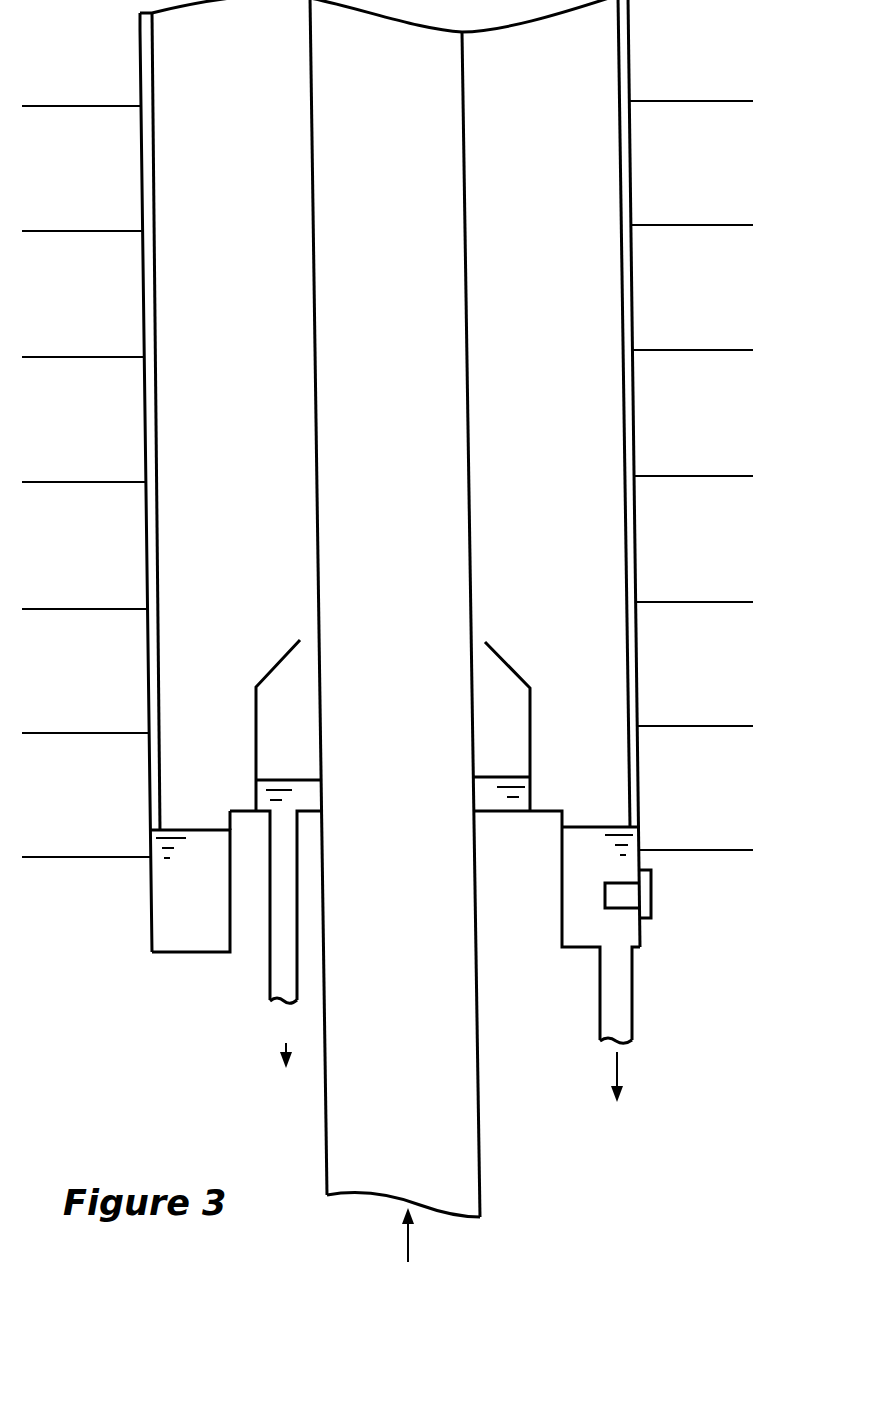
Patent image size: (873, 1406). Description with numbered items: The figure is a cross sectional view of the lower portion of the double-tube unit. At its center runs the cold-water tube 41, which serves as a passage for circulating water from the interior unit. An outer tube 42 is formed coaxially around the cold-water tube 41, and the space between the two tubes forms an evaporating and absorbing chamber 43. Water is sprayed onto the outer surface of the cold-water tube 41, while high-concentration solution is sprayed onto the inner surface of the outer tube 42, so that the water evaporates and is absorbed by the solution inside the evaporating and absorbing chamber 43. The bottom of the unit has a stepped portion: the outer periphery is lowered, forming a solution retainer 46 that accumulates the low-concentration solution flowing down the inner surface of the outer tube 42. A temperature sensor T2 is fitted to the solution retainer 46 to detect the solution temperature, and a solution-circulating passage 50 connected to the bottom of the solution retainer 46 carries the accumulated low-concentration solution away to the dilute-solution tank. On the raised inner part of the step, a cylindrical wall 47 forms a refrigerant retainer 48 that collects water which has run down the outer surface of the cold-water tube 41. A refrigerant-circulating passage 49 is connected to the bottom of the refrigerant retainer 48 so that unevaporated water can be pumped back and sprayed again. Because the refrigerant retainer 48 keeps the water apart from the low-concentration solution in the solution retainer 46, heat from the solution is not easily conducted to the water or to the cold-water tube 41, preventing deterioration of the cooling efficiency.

The cold-water tube 41 is at (483, 1188).
The outer tube 42 is at (633, 174).
The evaporating and absorbing chamber 43 is at (592, 447).
The solution retainer 46 is at (167, 897).
The cylindrical wall 47 is at (273, 668).
The refrigerant retainer 48 is at (483, 792).
The refrigerant-circulating passage 49 is at (270, 970).
The solution-circulating passage 50 is at (635, 990).
The temperature sensor T2 is at (652, 892).